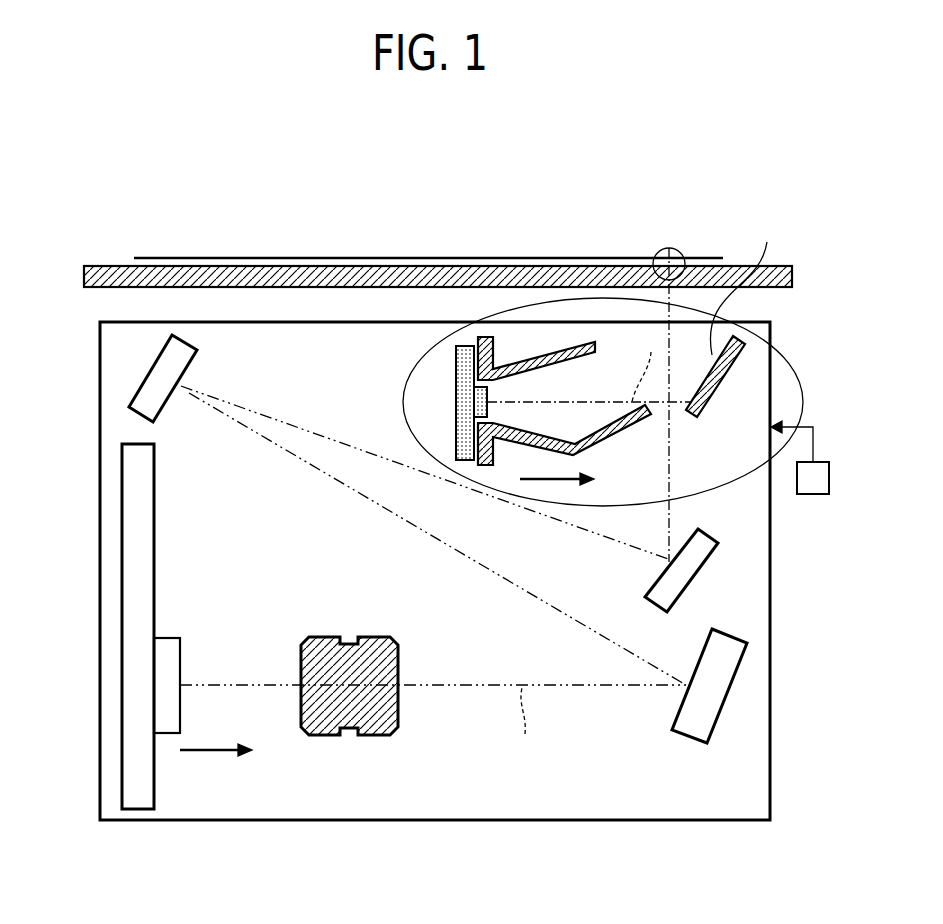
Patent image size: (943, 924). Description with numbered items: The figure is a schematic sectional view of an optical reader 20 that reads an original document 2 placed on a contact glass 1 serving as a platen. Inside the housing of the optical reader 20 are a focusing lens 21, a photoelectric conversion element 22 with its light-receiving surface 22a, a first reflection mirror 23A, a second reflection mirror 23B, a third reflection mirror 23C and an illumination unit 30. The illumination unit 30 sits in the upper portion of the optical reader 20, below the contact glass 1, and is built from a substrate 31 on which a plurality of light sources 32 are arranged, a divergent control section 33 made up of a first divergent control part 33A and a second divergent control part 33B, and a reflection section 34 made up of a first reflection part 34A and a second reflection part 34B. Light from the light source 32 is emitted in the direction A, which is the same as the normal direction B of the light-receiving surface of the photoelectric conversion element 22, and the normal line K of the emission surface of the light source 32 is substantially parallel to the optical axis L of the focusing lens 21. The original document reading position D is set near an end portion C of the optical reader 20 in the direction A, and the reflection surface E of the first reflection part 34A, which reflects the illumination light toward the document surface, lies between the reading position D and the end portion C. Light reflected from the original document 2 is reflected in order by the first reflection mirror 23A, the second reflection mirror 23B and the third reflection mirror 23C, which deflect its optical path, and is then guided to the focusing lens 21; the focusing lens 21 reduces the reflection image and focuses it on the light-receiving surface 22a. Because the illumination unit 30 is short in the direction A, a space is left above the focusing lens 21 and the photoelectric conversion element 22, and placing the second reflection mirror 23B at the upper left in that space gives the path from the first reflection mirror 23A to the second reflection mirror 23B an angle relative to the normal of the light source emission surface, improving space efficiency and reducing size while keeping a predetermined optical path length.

The contact glass 1 is at (97, 266).
The original document 2 is at (183, 258).
The optical reader 20 is at (100, 345).
The focusing lens 21 is at (375, 725).
The photoelectric conversion element 22 is at (137, 800).
The light-receiving surface 22a is at (167, 692).
The first reflection mirror 23A is at (685, 572).
The second reflection mirror 23B is at (148, 400).
The third reflection mirror 23C is at (697, 727).
The illumination unit 30 is at (783, 352).
The substrate 31 is at (465, 380).
The light source 32 is at (478, 400).
The divergent control section 33 is at (542, 333).
The first divergent control part 33A is at (528, 427).
The second divergent control part 33B is at (490, 385).
The reflection section 34 is at (732, 415).
The first reflection part 34A is at (720, 387).
The second reflection part 34B is at (607, 442).
The direction A is at (557, 469).
The normal direction B is at (216, 739).
The end portion C is at (800, 457).
The original document reading position D is at (670, 248).
The reflection surface E is at (742, 285).
The normal line K is at (646, 364).
The optical axis L is at (527, 722).